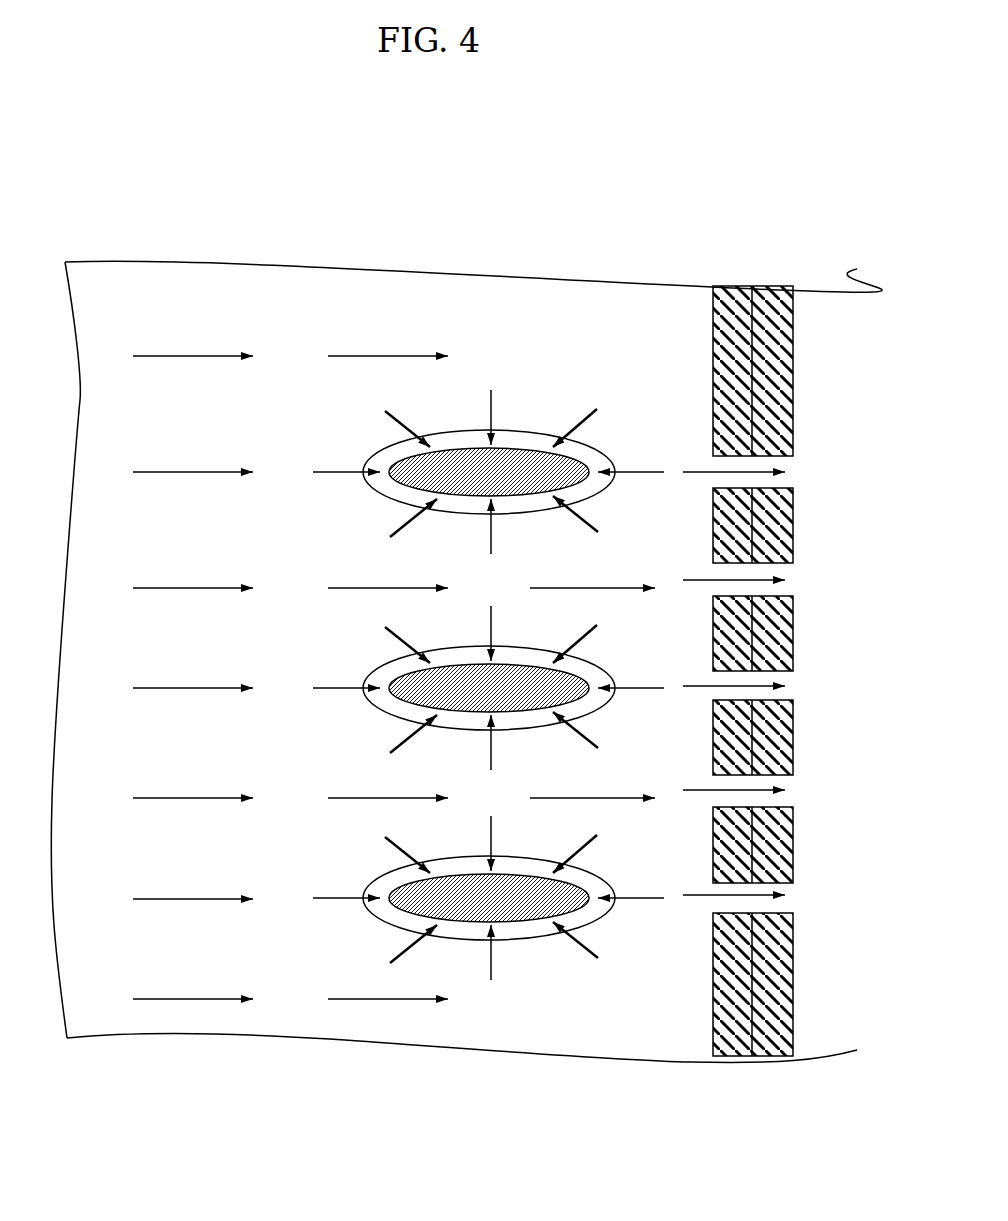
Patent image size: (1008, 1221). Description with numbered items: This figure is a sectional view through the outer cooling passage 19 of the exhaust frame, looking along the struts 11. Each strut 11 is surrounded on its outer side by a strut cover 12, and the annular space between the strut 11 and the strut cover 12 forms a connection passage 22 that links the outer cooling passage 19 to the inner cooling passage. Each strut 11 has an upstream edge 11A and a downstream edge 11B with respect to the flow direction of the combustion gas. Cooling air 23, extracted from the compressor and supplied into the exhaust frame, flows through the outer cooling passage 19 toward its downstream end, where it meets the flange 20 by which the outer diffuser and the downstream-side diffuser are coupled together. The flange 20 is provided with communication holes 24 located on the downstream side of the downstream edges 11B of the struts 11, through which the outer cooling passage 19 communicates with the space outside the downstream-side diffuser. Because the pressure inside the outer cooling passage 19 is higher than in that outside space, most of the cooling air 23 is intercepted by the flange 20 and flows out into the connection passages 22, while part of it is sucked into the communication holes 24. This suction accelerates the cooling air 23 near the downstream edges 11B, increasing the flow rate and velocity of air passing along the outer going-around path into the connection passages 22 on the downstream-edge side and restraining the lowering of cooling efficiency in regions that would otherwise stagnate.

The strut 11 is at (498, 510).
The upstream edge 11A is at (388, 488).
The downstream edge 11B is at (598, 485).
The strut cover 12 is at (530, 432).
The outer cooling passage 19 is at (151, 312).
The flange 20 is at (793, 340).
The connection passage 22 is at (587, 455).
The cooling air 23 is at (180, 588).
The communication hole 24 is at (784, 472).